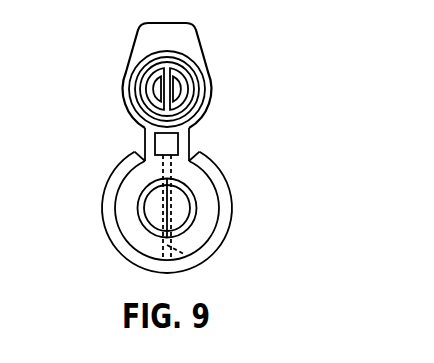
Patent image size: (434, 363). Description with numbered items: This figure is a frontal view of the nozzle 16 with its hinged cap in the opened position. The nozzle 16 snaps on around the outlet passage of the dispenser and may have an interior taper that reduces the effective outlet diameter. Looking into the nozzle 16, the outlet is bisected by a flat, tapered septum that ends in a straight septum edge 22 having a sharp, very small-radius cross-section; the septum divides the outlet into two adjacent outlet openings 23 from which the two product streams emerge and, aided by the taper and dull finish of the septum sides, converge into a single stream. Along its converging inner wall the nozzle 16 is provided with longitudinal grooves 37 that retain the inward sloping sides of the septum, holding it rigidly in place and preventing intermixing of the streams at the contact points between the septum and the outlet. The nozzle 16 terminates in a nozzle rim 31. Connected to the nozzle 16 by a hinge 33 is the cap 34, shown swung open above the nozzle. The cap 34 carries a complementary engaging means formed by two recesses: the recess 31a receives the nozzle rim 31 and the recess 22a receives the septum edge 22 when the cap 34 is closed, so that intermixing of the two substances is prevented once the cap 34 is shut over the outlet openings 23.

The cap 34 is at (140, 44).
The recess 22a is at (193, 62).
The recess 31a is at (146, 91).
The hinge 33 is at (145, 135).
The nozzle 16 is at (137, 257).
The nozzle rim 31 is at (147, 228).
The septum edge 22 is at (163, 192).
The outlet openings 23 is at (155, 209).
The longitudinal grooves 37 is at (199, 257).